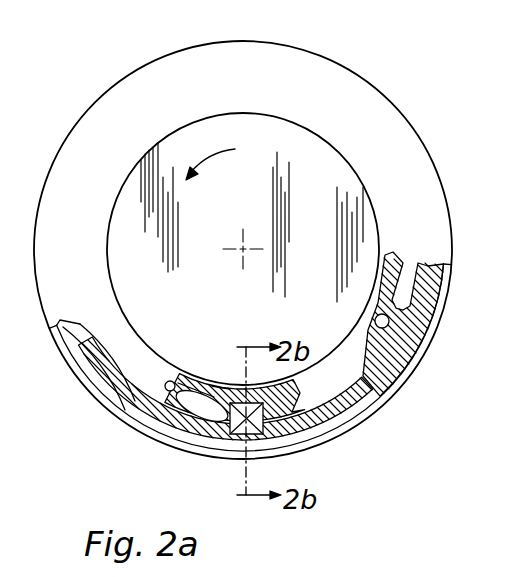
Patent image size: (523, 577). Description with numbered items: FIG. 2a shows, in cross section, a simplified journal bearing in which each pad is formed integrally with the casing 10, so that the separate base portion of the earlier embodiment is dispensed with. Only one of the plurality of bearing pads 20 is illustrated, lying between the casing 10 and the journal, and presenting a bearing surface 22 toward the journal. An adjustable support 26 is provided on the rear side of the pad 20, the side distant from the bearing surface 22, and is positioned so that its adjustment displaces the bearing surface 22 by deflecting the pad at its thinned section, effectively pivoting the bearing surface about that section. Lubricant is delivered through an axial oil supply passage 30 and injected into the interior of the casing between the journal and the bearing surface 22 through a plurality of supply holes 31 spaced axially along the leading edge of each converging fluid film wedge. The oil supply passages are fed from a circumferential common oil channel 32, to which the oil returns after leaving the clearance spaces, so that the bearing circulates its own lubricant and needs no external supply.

The casing 10 is at (355, 412).
The bearing pad 20 is at (287, 395).
The bearing surface 22 is at (212, 384).
The adjustable support 26 is at (240, 434).
The axial oil supply passage 30 is at (167, 381).
The supply holes 31 is at (182, 378).
The circumferential common oil channel 32 is at (122, 407).